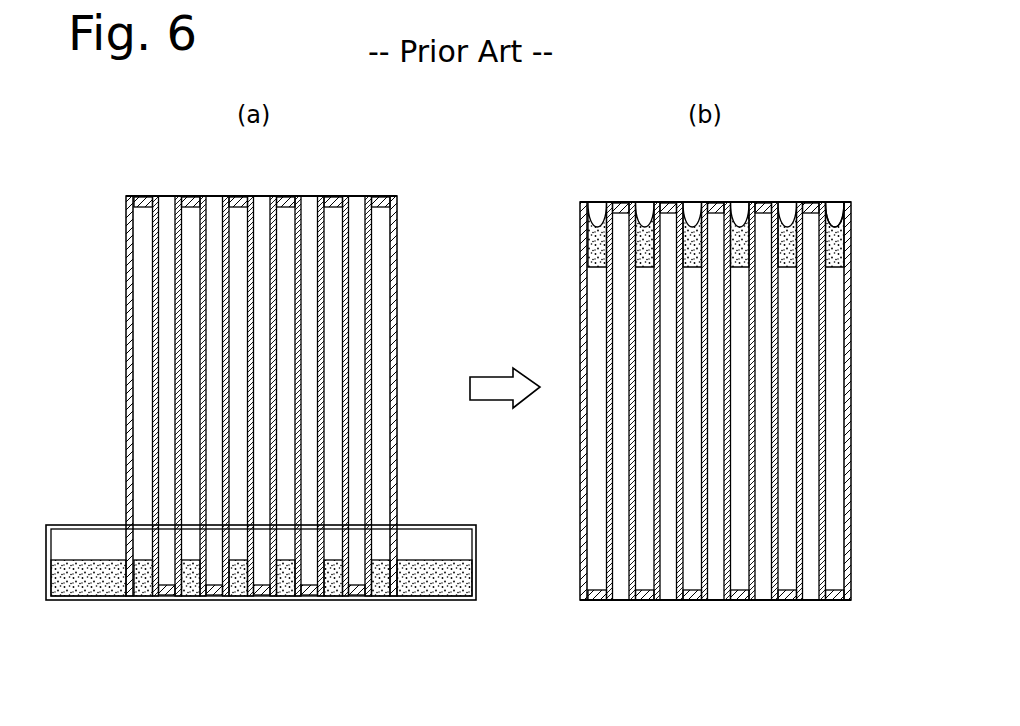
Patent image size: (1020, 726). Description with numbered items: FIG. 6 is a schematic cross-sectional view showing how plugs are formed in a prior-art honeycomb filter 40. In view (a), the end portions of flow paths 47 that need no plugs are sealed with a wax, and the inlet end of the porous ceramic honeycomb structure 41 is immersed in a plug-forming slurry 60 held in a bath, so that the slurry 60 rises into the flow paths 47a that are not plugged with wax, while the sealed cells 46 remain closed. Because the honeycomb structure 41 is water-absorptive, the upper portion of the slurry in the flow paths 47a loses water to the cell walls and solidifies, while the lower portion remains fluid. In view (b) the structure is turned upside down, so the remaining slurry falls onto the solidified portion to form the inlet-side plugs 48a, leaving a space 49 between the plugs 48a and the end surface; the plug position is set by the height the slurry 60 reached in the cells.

The honeycomb filter 40 is at (222, 398).
The honeycomb structure 41 is at (128, 326).
The terminal receiving cavity 46 is at (302, 225).
The flow paths 47 is at (356, 210).
The flow paths not plugged with wax 47a is at (145, 538).
The inlet-side plugs 48a is at (838, 250).
The space 49 is at (832, 222).
The plug-forming slurry 60 is at (90, 580).